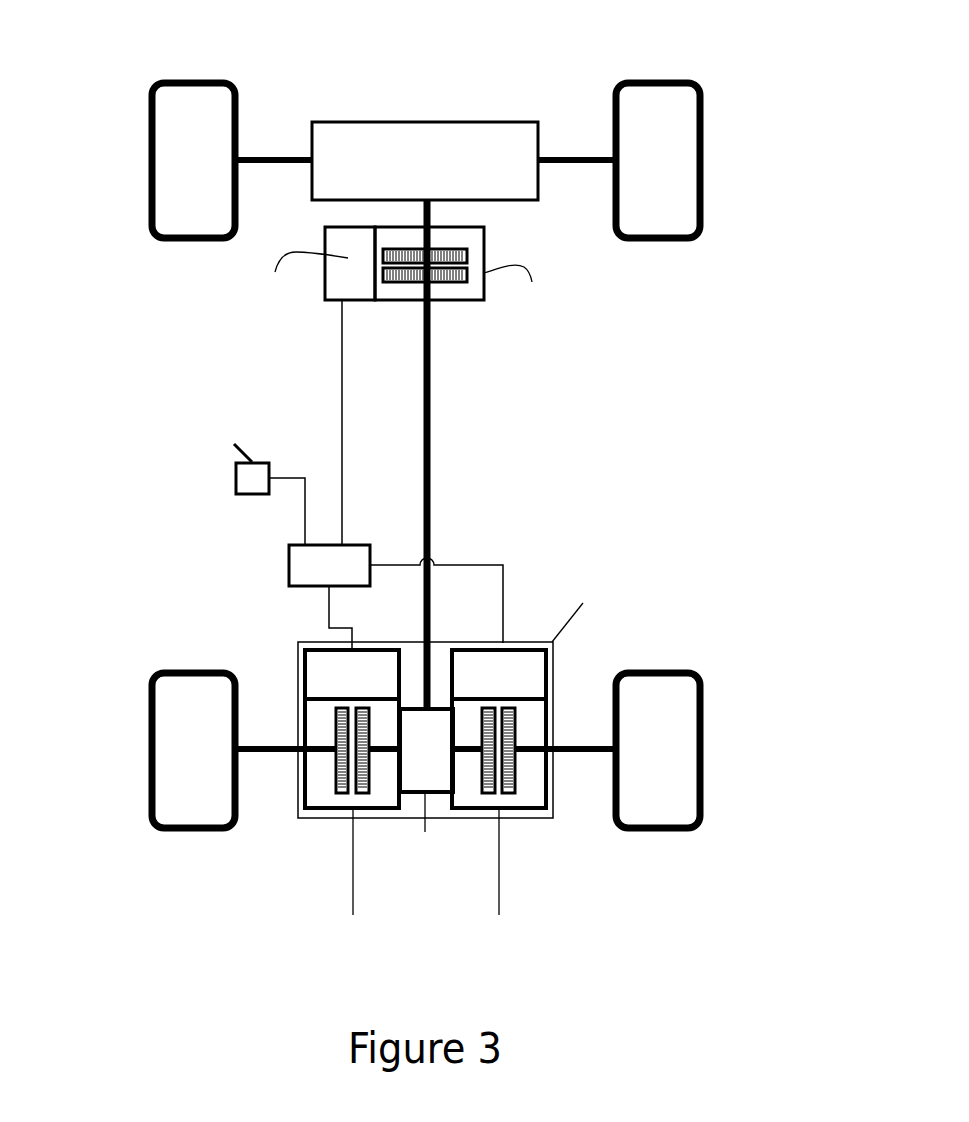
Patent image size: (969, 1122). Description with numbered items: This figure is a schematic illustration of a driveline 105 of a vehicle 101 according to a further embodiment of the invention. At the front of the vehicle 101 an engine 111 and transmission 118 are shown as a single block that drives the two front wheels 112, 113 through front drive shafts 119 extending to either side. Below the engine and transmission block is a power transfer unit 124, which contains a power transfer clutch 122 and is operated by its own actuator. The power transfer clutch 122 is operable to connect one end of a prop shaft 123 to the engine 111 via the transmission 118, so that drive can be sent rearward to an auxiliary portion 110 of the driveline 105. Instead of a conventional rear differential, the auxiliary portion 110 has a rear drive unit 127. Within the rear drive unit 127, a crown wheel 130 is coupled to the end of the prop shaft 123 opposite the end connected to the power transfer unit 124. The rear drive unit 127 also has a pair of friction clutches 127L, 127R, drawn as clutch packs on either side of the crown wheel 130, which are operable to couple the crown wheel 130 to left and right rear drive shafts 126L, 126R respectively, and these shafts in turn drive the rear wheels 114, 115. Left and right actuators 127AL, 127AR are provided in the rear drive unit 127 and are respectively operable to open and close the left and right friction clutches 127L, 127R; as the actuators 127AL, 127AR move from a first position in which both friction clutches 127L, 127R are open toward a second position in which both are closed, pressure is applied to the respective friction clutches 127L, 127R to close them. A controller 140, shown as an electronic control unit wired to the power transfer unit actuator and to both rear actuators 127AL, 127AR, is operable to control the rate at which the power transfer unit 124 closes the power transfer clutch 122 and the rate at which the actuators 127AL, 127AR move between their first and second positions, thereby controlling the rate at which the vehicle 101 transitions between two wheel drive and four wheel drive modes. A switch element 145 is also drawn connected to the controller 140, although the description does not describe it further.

The vehicle 101 is at (768, 59).
The driveline 105 is at (118, 398).
The auxiliary portion 110 is at (478, 427).
The engine 111 is at (362, 130).
The transmission 118 is at (362, 130).
The front wheel 112 is at (150, 215).
The front wheel 113 is at (700, 215).
The rear wheel 114 is at (150, 795).
The rear wheel 115 is at (702, 795).
The front drive shaft 119 is at (258, 158).
The power transfer clutch 122 is at (467, 253).
The prop shaft 123 is at (429, 495).
The power transfer unit 124 is at (455, 300).
The left rear drive shaft 126L is at (268, 753).
The right rear drive shaft 126R is at (581, 752).
The rear drive unit 127 is at (517, 642).
The left actuator 127AL is at (317, 658).
The right actuator 127AR is at (541, 659).
The left friction clutch 127L is at (322, 803).
The right friction clutch 127R is at (527, 803).
The crown wheel 130 is at (444, 759).
The controller 140 is at (294, 565).
The driver selector switch 145 is at (243, 479).